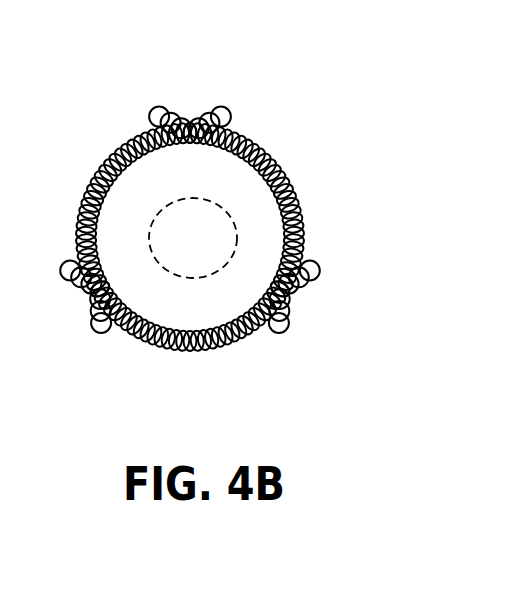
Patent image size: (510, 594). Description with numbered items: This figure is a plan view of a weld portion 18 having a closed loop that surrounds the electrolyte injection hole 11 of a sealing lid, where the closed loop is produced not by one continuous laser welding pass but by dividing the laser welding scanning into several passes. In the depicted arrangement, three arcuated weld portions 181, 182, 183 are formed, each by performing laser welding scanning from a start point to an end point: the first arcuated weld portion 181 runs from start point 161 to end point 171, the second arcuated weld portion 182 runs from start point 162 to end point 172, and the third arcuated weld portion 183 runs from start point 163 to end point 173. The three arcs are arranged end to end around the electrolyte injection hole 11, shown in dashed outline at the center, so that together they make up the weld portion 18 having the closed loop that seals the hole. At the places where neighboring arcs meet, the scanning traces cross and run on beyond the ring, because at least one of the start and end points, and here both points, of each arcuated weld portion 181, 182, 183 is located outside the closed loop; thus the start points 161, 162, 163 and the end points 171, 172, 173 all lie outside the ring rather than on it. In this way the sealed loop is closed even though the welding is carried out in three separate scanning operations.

The weld portion 18 is at (257, 131).
The arcuated weld portion 181 is at (260, 153).
The arcuated weld portion 182 is at (82, 192).
The arcuated weld portion 183 is at (148, 348).
The start point 161 is at (280, 333).
The start point 162 is at (225, 105).
The start point 163 is at (60, 273).
The end point 171 is at (150, 108).
The end point 172 is at (96, 336).
The end point 173 is at (320, 265).
The electrolyte injection hole 11 is at (233, 238).